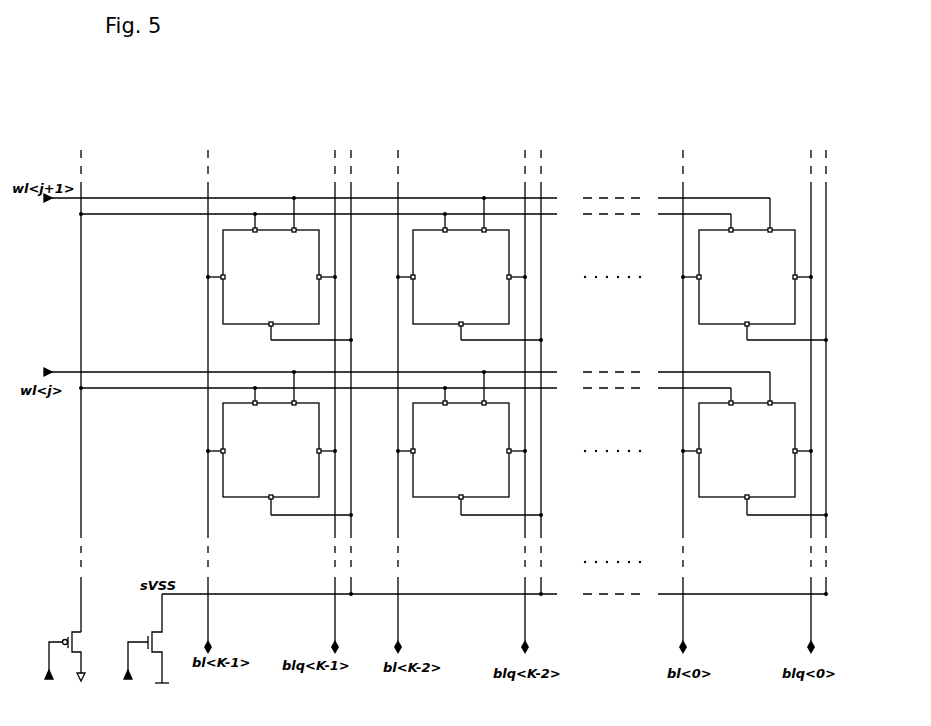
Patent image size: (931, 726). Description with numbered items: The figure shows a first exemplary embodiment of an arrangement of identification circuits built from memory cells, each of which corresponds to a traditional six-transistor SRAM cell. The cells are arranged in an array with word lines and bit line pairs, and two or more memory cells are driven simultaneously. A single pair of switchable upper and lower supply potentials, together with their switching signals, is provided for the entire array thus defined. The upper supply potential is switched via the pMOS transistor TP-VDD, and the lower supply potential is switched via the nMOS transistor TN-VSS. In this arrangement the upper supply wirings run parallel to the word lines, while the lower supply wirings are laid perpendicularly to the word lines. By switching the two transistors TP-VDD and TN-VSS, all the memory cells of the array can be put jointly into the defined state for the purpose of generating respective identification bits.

The pMOS transistor TP-VDD is at (65, 654).
The nMOS transistor TN-VSS is at (151, 649).